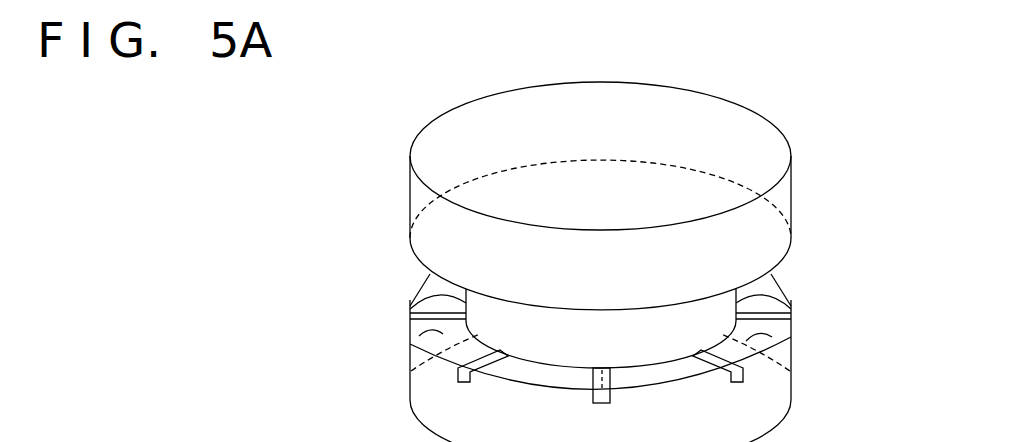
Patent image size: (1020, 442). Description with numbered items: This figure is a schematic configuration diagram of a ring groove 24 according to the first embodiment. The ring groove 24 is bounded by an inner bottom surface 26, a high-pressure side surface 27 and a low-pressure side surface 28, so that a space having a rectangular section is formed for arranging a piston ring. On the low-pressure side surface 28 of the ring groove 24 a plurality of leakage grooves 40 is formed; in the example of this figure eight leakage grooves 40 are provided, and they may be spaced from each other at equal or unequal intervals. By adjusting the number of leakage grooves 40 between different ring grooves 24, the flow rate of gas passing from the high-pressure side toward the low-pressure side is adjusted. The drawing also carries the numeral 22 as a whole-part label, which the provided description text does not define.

The drum / cylindrical body 22 is at (360, 115).
The ring groove 24 is at (836, 267).
The inner bottom surface 26 is at (410, 302).
The high-pressure side surface 27 is at (418, 267).
The low-pressure side surface 28 is at (410, 344).
The leakage groove 40 is at (604, 369).